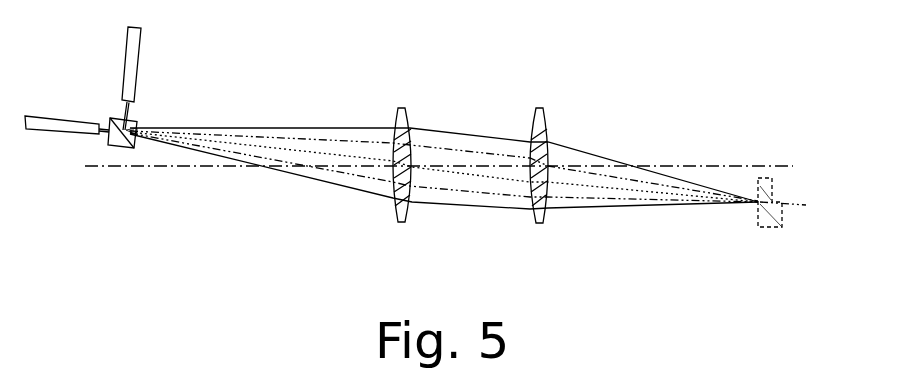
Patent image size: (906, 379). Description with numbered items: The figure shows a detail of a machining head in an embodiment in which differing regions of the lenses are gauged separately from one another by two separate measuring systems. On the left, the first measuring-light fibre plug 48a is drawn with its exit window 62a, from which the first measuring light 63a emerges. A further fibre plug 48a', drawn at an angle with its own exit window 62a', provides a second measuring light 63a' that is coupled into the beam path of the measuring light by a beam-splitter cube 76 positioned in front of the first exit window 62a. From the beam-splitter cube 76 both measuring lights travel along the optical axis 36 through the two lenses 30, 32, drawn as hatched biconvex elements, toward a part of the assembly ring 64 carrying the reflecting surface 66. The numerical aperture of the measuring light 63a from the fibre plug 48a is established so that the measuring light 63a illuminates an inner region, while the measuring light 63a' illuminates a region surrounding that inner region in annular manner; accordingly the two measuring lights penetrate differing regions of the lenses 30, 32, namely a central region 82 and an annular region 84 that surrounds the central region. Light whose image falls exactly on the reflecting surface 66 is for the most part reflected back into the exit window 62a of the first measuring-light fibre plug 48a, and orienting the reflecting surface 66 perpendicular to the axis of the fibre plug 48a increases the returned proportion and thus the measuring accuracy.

The first measuring-light fibre plug 48a is at (60, 91).
The further fibre plug 48a' is at (172, 64).
The exit window 62a is at (88, 110).
The exit window 62a' is at (178, 112).
The beam-splitter cube 76 is at (112, 148).
The optical axis 36 is at (780, 165).
The measuring light 63a is at (444, 189).
The measuring light 63a' is at (444, 140).
The lens 30 is at (368, 165).
The central region 82 is at (389, 152).
The annular region 84 is at (393, 197).
The lens 32 is at (542, 128).
The assembly ring 64 is at (747, 239).
The reflecting surface 66 is at (758, 212).